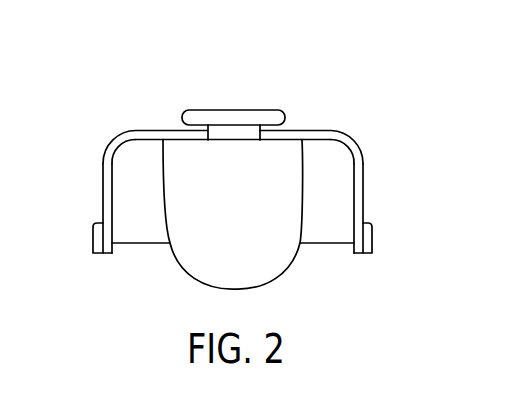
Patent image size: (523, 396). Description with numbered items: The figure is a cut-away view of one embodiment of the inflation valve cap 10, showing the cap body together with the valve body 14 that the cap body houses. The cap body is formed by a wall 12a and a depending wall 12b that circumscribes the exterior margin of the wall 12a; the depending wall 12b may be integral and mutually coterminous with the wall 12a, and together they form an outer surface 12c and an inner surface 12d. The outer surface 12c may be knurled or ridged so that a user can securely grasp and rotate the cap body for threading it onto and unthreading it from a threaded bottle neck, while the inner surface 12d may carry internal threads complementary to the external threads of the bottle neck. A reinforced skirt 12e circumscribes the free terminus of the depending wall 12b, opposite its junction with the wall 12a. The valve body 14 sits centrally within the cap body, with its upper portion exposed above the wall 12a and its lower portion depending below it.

The inflation valve cap 10 is at (363, 108).
The wall 12a is at (160, 131).
The depending wall 12b is at (110, 182).
The outer surface 12c is at (365, 167).
The inner surface 12d is at (325, 228).
The reinforced skirt 12e is at (373, 238).
The valve body 14 is at (235, 110).